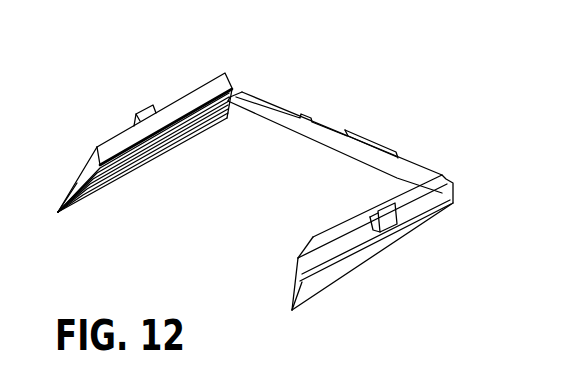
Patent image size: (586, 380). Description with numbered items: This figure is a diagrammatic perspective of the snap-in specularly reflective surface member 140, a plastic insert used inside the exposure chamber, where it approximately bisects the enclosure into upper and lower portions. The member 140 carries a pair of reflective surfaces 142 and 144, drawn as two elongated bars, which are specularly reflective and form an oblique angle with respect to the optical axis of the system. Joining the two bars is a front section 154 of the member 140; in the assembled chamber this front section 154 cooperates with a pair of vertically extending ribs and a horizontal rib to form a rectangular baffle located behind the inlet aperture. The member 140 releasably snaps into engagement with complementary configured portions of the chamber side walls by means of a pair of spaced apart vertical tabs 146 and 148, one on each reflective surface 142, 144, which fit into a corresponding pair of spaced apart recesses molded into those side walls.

The member 140 is at (298, 102).
The reflective surface 142 is at (113, 153).
The reflective surface 144 is at (313, 250).
The vertical tab 146 is at (147, 104).
The vertical tab 148 is at (394, 222).
The front section 154 is at (322, 142).